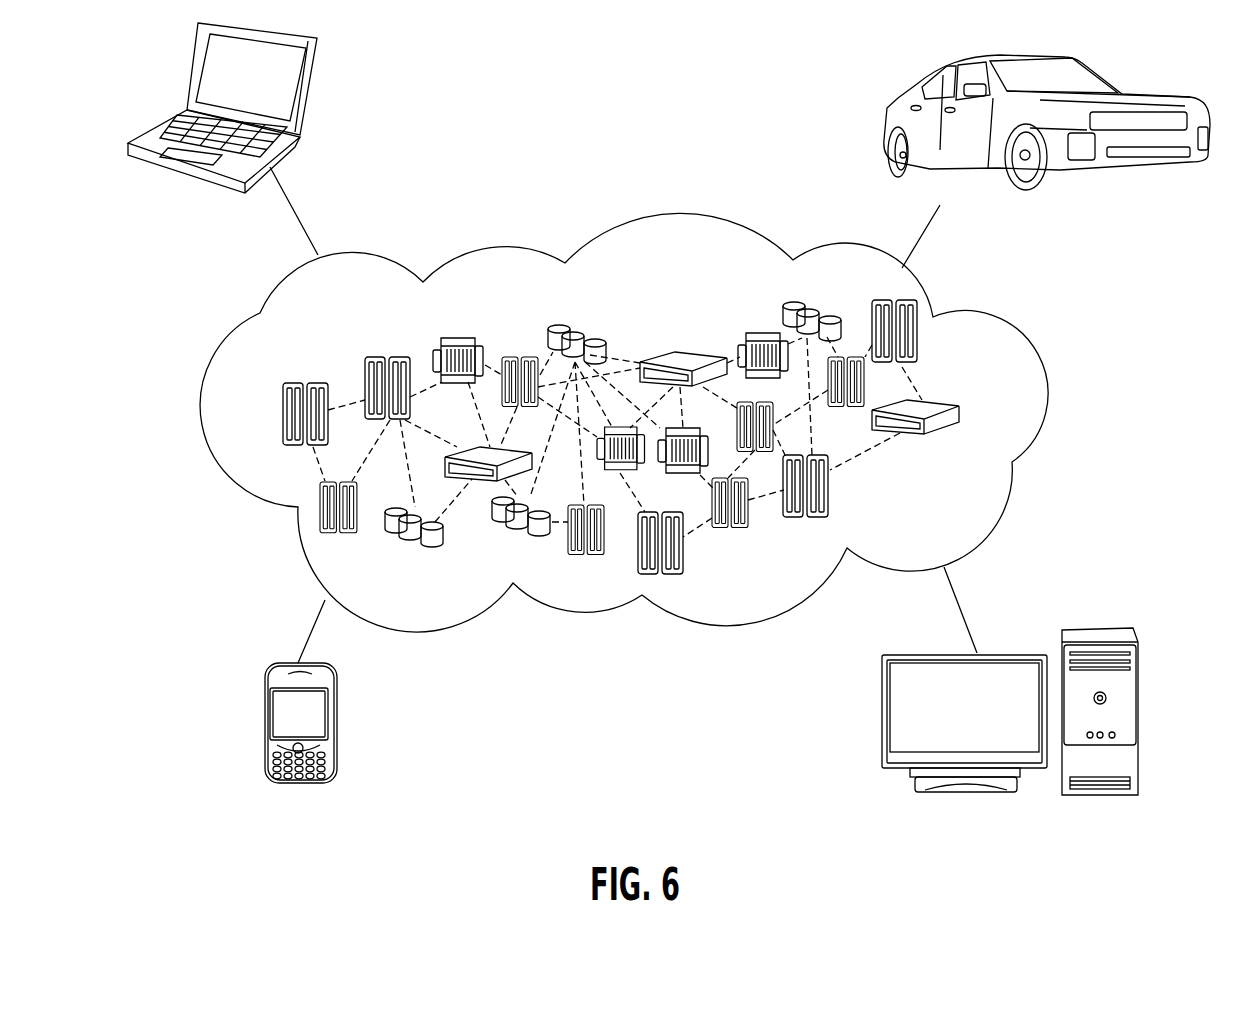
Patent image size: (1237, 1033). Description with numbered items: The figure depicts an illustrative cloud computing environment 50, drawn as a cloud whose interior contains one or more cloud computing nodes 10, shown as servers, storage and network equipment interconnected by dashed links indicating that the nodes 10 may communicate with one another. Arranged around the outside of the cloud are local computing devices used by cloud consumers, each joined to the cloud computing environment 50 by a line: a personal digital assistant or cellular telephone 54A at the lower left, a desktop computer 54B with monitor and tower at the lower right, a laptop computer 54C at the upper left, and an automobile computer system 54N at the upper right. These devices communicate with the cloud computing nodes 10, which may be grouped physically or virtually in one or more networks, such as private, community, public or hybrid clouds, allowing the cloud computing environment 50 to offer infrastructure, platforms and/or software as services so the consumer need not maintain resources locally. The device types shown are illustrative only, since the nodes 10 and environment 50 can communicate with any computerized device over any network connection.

The cloud computing nodes 10 is at (996, 413).
The cloud computing environment 50 is at (1022, 328).
The personal digital assistant or cellular telephone 54A is at (270, 728).
The desktop computer 54B is at (1107, 628).
The laptop computer 54C is at (305, 95).
The automobile computer system 54N is at (889, 105).